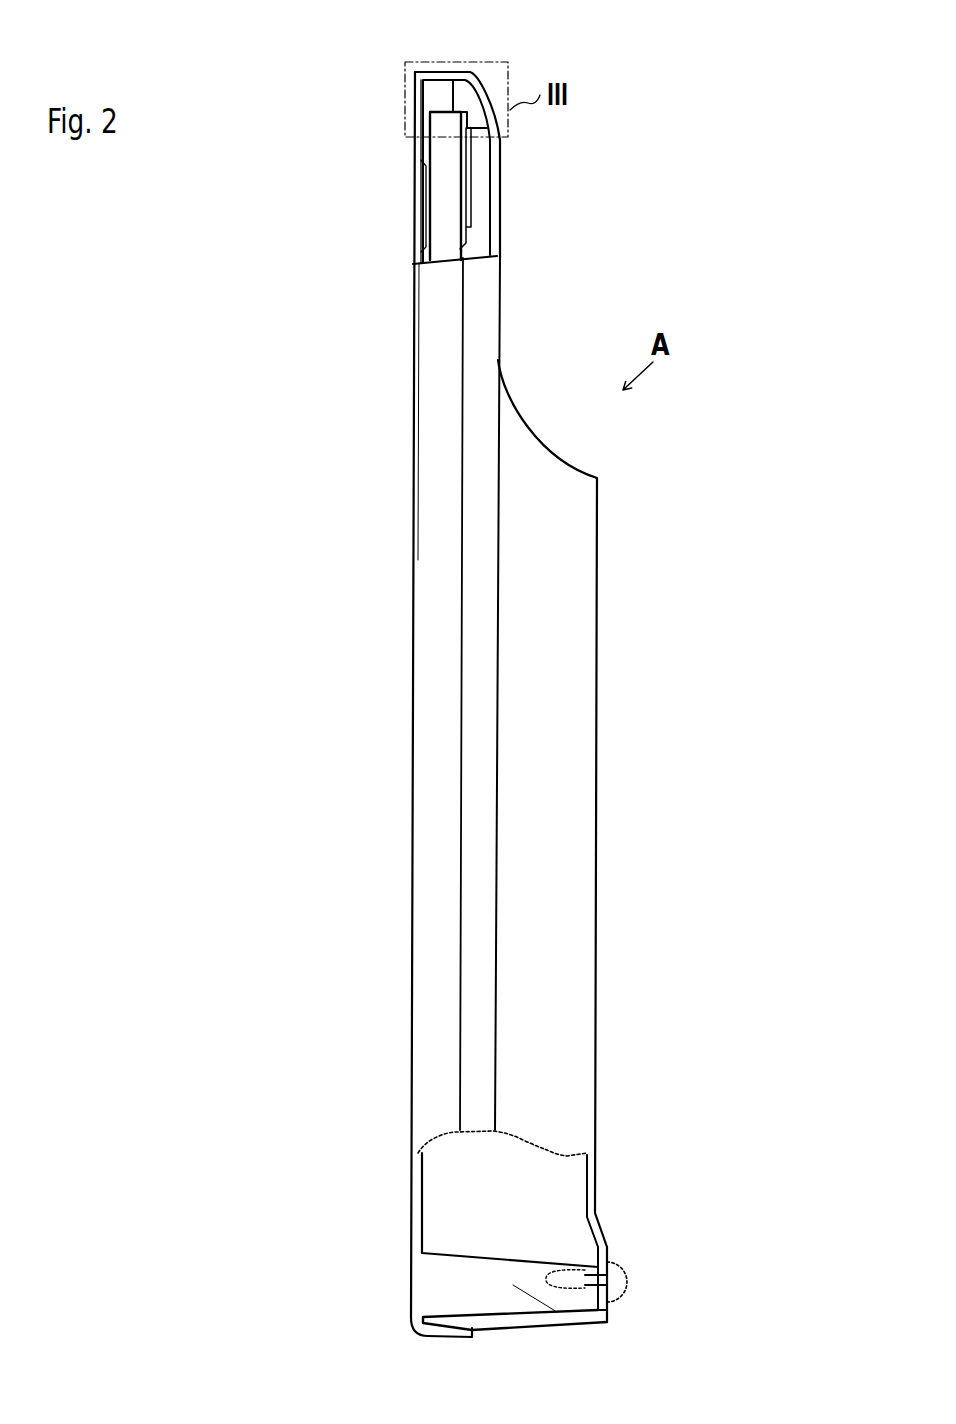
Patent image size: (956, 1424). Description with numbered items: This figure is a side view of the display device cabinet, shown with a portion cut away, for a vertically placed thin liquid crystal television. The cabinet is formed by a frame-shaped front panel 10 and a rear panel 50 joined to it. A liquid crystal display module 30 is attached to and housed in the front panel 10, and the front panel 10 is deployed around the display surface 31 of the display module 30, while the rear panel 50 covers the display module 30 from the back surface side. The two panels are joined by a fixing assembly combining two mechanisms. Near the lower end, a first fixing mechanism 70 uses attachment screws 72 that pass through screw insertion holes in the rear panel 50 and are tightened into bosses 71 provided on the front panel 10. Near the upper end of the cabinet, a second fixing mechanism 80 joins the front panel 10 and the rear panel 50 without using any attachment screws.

The front panel 10 is at (415, 118).
The display module 30 is at (442, 207).
The display surface 31 is at (436, 250).
The rear panel 50 is at (502, 210).
The first fixing mechanism 70 is at (612, 1192).
The bosses 71 is at (607, 1320).
The attachment screws 72 is at (625, 1275).
The second fixing mechanism 80 is at (435, 90).